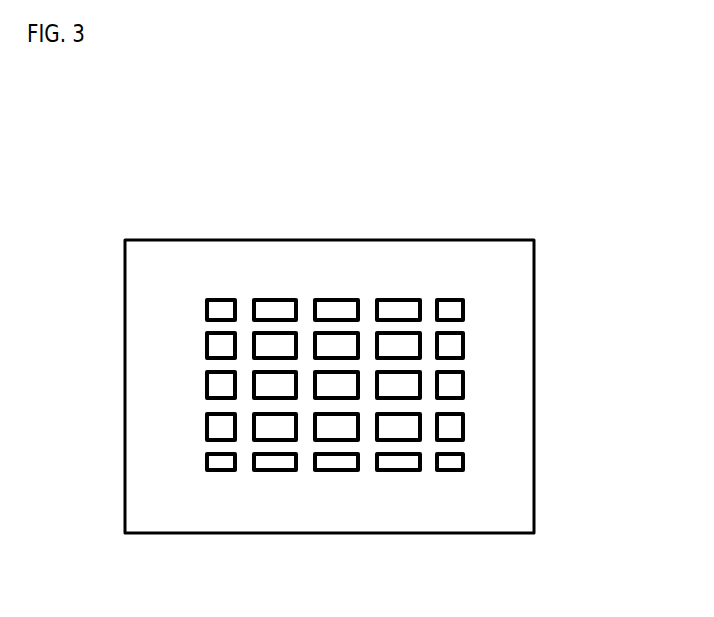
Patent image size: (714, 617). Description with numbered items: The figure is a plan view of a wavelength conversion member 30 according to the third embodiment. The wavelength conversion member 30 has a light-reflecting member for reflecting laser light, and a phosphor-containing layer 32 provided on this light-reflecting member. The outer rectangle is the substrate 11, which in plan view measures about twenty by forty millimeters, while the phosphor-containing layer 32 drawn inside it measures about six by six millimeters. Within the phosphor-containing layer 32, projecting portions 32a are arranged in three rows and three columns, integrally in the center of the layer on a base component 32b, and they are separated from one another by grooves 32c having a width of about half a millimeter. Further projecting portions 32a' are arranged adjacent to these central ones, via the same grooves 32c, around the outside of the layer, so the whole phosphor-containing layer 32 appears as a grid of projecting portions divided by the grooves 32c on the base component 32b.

The substrate 11 is at (158, 492).
The wavelength conversion member 30 is at (569, 251).
The phosphor-containing layer 32 is at (350, 160).
The projecting portions 32a is at (352, 387).
The projecting portions 32a' is at (385, 386).
The base component 32b is at (247, 298).
The grooves 32c is at (270, 442).